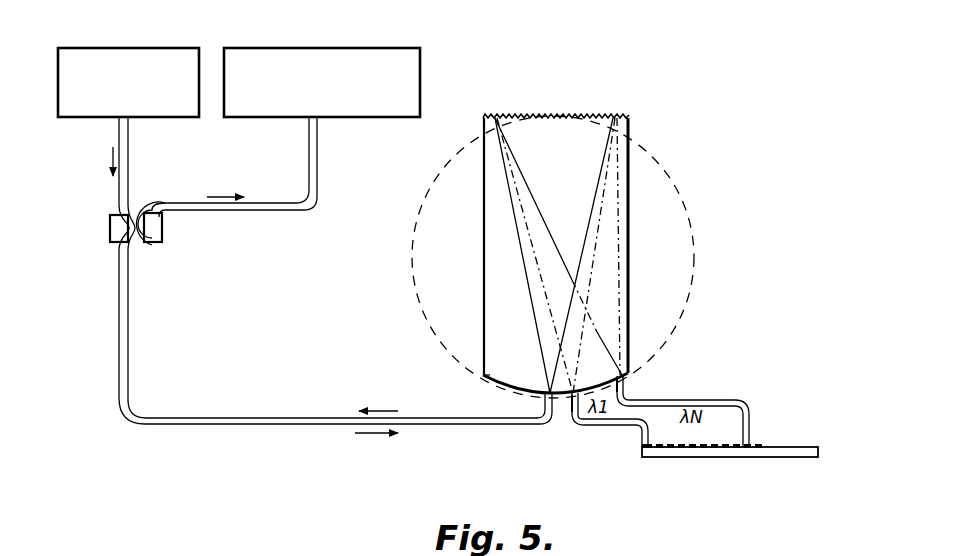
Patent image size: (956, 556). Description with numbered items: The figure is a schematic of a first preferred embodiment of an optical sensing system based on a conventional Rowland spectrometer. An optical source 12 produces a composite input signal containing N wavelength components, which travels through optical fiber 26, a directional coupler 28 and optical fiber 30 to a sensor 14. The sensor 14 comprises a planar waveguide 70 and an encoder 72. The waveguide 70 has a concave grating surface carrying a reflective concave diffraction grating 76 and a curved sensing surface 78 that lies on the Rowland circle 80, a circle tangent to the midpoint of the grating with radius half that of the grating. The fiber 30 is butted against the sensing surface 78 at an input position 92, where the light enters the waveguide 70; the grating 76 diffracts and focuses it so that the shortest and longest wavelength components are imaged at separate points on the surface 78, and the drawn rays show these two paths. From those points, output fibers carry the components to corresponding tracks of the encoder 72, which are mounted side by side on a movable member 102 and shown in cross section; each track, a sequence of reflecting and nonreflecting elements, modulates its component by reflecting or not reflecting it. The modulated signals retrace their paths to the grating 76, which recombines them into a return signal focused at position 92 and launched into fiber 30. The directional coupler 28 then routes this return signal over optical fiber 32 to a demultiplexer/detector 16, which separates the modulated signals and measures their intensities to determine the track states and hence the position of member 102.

The optical source 12 is at (121, 46).
The demultiplexer/detector 16 is at (322, 46).
The optical fiber 26 is at (129, 158).
The directional coupler 28 is at (108, 229).
The optical fiber 32 is at (318, 170).
The optical fiber 30 is at (128, 331).
The sensor 14 is at (750, 178).
The Rowland circle 80 is at (693, 262).
The planar waveguide 70 is at (479, 292).
The reflective concave diffraction grating 76 is at (560, 108).
The sensing surface 78 is at (502, 389).
The input position 92 is at (543, 394).
The encoder 72 is at (776, 420).
The movable member 102 is at (820, 457).